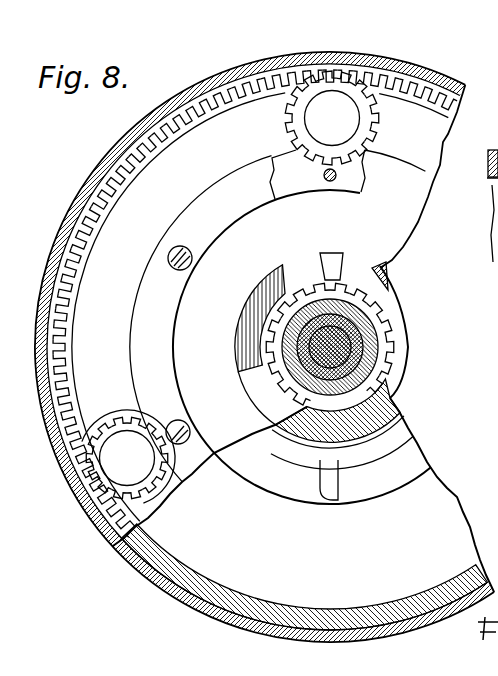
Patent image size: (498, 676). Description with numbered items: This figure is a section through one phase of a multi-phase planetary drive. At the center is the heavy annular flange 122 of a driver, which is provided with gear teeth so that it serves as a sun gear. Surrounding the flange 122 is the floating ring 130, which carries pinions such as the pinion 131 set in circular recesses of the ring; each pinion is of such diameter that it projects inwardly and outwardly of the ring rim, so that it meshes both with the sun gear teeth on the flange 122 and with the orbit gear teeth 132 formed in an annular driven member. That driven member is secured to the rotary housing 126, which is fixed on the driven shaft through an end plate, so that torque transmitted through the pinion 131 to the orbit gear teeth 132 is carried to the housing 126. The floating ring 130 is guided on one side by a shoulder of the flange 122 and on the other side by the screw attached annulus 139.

The annular flange 122 is at (192, 318).
The rotary housing 126 is at (340, 57).
The floating ring 130 is at (295, 153).
The pinion 131 is at (345, 120).
The orbit gear teeth 132 is at (402, 82).
The screw attached annulus 139 is at (387, 187).